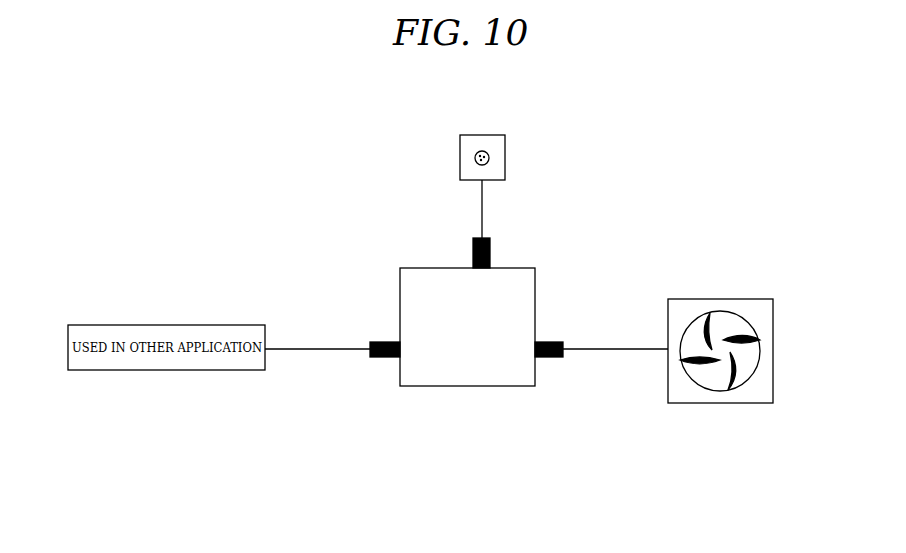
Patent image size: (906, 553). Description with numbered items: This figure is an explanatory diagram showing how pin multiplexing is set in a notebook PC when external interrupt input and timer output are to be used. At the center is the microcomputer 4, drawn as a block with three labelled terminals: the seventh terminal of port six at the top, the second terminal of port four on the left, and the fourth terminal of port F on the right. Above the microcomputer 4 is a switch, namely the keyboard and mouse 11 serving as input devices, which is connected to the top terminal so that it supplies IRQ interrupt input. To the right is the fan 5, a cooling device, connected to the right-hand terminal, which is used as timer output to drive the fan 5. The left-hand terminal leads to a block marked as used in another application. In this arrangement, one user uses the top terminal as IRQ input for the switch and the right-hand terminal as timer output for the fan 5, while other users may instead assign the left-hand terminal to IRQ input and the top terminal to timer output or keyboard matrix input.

The keyboard and mouse 11 is at (505, 157).
The microcomputer 4 is at (522, 268).
The fan 5 is at (718, 403).